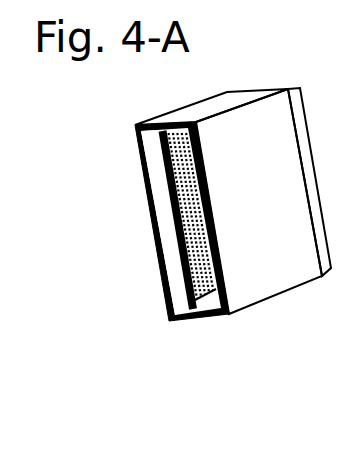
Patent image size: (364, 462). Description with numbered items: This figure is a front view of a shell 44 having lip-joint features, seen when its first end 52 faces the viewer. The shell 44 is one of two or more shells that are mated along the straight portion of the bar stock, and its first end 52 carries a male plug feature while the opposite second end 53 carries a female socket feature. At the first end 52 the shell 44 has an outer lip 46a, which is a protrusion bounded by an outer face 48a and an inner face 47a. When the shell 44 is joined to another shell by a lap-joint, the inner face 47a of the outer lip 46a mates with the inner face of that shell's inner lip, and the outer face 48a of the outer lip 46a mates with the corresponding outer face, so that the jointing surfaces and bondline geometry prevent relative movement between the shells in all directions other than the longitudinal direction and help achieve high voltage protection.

The shell 44 is at (287, 333).
The second end 53 is at (308, 88).
The first end 52 is at (190, 327).
The outer lip 46a is at (157, 178).
The inner face 47a is at (172, 215).
The outer face 48a is at (172, 297).